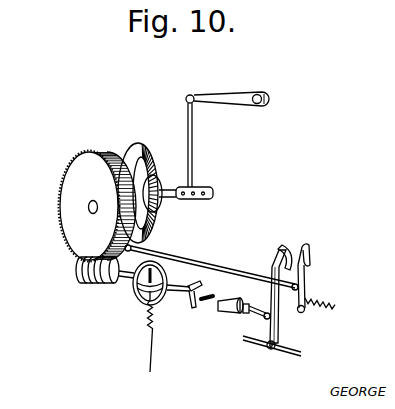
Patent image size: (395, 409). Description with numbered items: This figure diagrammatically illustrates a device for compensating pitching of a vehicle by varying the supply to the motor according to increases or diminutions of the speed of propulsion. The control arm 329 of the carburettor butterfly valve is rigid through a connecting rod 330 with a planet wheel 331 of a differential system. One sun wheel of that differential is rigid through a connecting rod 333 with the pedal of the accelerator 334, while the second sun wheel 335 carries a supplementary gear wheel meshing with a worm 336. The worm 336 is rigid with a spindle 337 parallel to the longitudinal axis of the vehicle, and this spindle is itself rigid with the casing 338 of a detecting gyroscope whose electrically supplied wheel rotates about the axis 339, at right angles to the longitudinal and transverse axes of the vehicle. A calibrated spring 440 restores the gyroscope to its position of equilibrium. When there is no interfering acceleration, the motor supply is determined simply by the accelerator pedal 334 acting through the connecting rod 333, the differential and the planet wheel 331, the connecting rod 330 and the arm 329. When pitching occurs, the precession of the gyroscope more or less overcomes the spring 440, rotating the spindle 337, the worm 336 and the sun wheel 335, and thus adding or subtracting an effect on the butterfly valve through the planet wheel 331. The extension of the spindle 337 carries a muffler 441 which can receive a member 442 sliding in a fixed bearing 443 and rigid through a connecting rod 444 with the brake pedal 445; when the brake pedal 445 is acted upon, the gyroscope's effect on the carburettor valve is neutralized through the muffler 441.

The control arm of the butterfly valve 329 is at (229, 99).
The connecting rod 330 is at (195, 135).
The planet wheel 331 is at (149, 180).
The connecting rod 333 is at (193, 260).
The pedal of the accelerator 334 is at (307, 274).
The second sun wheel 335 is at (83, 218).
The worm 336 is at (86, 282).
The spindle 337 is at (121, 284).
The casing of the detecting gyroscope 338 is at (158, 303).
The axis 339 is at (133, 147).
The calibrated spring 440 is at (149, 345).
The muffler 441 is at (201, 285).
The member 442 is at (233, 311).
The bearing 443 is at (232, 316).
The connecting rod 444 is at (252, 317).
The brake pedal 445 is at (277, 305).